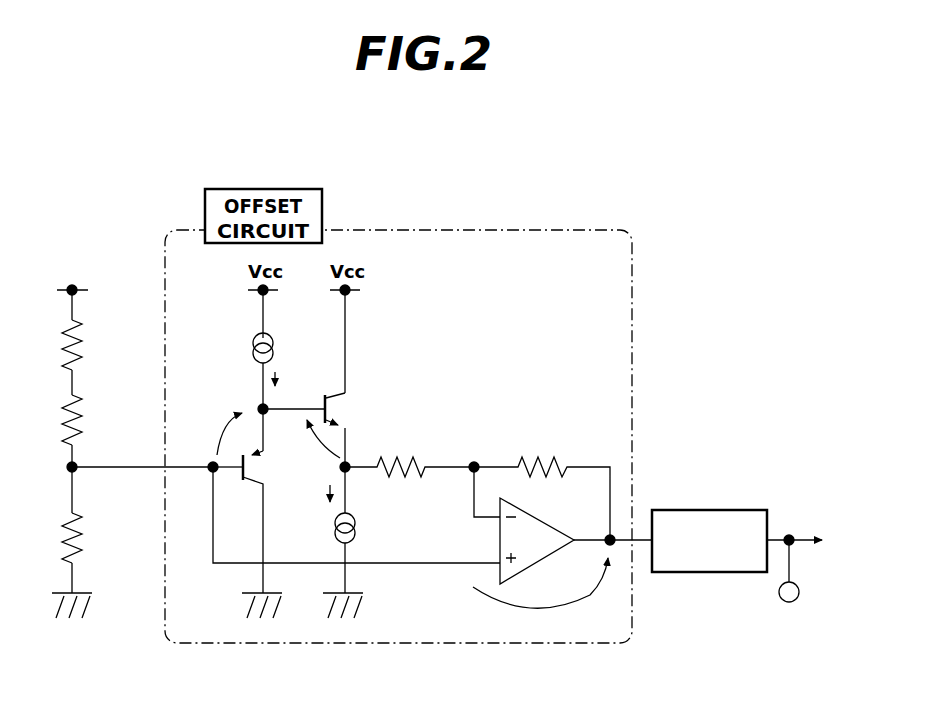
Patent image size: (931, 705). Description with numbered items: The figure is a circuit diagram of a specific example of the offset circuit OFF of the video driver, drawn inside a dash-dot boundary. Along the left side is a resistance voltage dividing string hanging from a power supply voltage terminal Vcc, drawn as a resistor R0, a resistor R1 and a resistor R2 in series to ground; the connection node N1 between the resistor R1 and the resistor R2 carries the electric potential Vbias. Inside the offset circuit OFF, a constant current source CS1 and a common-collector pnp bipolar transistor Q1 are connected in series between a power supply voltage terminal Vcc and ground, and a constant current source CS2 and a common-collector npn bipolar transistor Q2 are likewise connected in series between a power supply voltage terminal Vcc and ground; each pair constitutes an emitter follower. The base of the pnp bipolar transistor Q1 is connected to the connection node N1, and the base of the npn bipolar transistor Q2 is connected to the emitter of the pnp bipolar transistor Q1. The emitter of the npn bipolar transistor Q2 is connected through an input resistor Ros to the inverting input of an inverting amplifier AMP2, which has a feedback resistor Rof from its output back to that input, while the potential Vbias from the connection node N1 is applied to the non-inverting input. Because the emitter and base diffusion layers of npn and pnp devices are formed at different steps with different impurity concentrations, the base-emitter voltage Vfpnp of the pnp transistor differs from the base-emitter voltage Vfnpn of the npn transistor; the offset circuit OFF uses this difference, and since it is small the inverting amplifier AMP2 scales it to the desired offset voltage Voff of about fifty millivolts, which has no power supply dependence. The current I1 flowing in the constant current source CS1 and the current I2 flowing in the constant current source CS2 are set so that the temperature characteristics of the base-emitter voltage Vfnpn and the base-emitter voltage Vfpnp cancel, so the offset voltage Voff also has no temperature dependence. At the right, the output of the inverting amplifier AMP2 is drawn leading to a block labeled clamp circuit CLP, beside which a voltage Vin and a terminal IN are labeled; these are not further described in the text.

The offset circuit OFF is at (494, 230).
The power supply voltage terminal Vcc is at (74, 290).
The resistor R0 is at (88, 345).
The resistor R1 is at (88, 420).
The resistor R2 is at (88, 538).
The connection node N1 is at (66, 466).
The electric potential Vbias is at (142, 453).
The constant current source CS1 is at (287, 348).
The constant current source CS2 is at (369, 528).
The current I1 is at (288, 386).
The current I2 is at (319, 500).
The common-collector pnp bipolar transistor Q1 is at (255, 522).
The common-collector npn bipolar transistor Q2 is at (321, 430).
The base-emitter voltage of the pnp bipolar transistor Vfpnp is at (210, 427).
The base-emitter voltage of the npn bipolar transistor Vfnpn is at (305, 442).
The input resistor Ros is at (409, 481).
The feedback resistor Rof is at (542, 498).
The inverting amplifier AMP2 is at (576, 542).
The offset voltage Voff is at (540, 598).
The clamp circuit CLP is at (702, 510).
The input voltage Vin is at (797, 525).
The input terminal IN is at (781, 602).